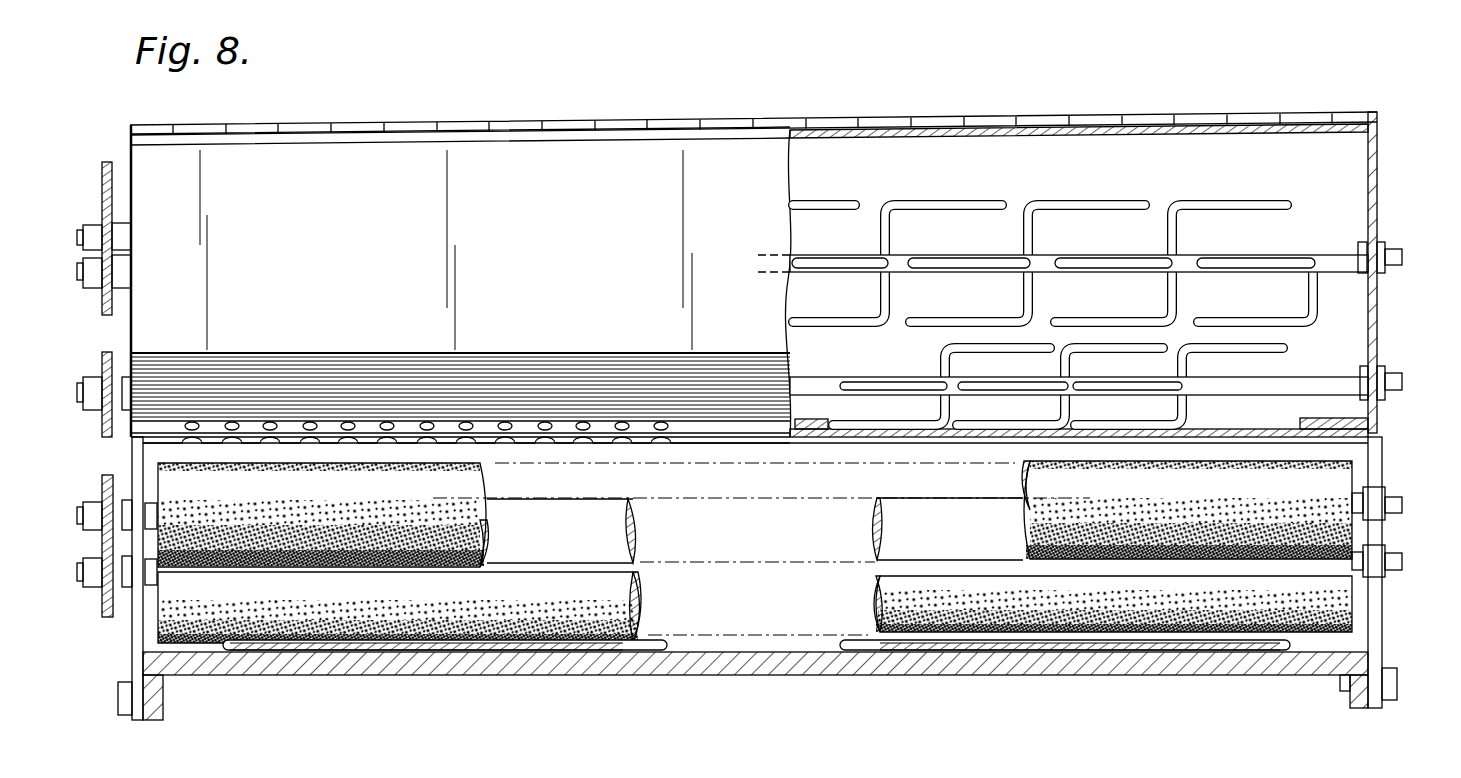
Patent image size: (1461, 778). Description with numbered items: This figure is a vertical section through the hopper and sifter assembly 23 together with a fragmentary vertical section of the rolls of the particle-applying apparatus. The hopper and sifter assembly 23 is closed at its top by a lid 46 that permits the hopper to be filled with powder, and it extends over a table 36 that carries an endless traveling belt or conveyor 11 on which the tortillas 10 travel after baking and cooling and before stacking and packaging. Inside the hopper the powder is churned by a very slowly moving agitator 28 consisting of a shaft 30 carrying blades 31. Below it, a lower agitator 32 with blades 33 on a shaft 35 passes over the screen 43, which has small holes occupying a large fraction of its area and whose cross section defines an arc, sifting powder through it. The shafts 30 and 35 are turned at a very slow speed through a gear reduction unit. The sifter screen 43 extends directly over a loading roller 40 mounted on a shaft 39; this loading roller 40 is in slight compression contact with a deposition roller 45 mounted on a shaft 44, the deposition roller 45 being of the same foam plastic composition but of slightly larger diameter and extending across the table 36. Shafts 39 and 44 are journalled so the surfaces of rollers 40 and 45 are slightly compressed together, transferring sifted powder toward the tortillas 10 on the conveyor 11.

The tortilla 10 is at (658, 638).
The conveyor 11 is at (500, 641).
The hopper and sifter assembly 23 is at (732, 136).
The agitator 28 is at (1322, 181).
The shaft 30 is at (1403, 265).
The blades 31 is at (842, 201).
The lower agitator 32 is at (1338, 363).
The blades 33 is at (940, 358).
The shaft 35 is at (1404, 383).
The table 36 is at (789, 661).
The shaft 39 is at (1403, 507).
The loading roller 40 is at (405, 545).
The screen 43 is at (535, 445).
The shaft 44 is at (1400, 572).
The deposition roller 45 is at (366, 636).
The lid 46 is at (458, 133).